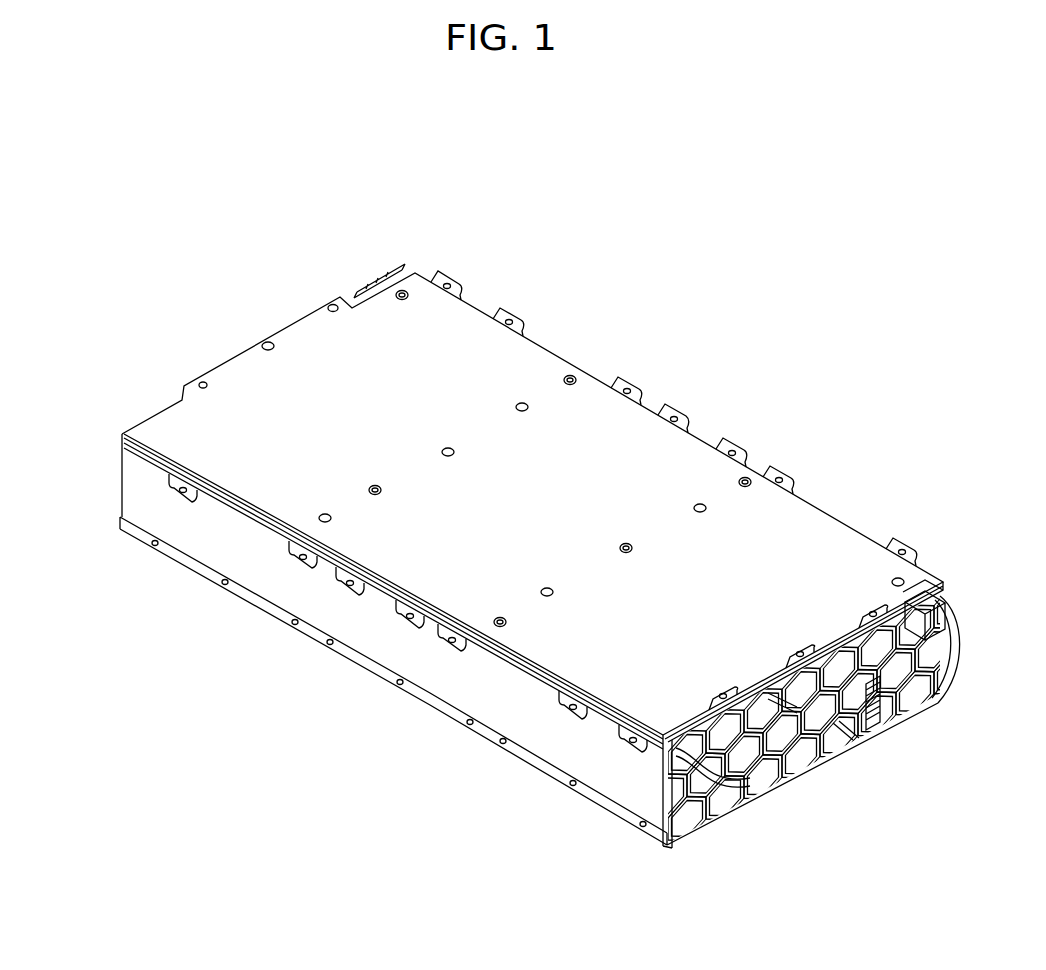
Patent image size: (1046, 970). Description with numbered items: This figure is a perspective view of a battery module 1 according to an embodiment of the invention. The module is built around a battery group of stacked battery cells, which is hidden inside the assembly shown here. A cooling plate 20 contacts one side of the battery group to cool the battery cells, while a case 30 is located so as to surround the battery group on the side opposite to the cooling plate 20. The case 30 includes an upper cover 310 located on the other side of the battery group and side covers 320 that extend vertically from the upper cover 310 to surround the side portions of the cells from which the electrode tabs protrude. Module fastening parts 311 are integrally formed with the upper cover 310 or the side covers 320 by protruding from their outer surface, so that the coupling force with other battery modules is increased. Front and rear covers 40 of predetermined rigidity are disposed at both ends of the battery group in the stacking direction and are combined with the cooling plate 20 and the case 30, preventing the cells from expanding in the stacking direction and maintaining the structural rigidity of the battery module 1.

The battery module 1 is at (62, 162).
The cooling plate 20 is at (262, 612).
The case 30 is at (232, 294).
The upper cover 310 is at (279, 398).
The module fastening part 311 is at (183, 476).
The side cover 320 is at (137, 495).
The front and rear cover 40 is at (822, 718).